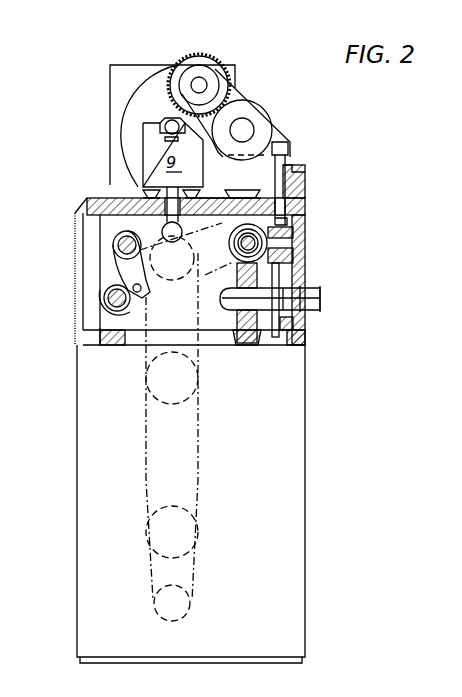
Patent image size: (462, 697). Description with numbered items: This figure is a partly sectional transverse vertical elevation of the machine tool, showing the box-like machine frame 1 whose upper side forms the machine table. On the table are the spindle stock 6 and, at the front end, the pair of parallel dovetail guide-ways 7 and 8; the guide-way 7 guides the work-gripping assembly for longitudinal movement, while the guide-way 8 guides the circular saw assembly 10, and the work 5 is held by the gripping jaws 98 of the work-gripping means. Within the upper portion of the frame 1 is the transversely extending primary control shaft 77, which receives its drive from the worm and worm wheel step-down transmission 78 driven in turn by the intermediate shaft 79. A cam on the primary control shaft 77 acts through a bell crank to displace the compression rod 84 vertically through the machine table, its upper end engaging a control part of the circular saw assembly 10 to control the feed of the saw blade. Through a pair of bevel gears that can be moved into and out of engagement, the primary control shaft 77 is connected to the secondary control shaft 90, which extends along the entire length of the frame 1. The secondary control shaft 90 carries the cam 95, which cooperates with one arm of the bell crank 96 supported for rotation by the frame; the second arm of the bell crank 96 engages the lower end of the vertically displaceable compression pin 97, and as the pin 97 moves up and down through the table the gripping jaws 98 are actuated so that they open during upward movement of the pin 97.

The machine frame 1 is at (88, 583).
The work 5 is at (171, 122).
The spindle stock 6 is at (113, 78).
The guide-way 7 is at (157, 190).
The guide-way 8 is at (252, 193).
The circular saw assembly 10 is at (217, 95).
The rotary shaft 77 is at (230, 312).
The worm and worm wheel step-down transmission 78 is at (252, 320).
The intermediate shaft 79 is at (248, 243).
The compression rod 84 is at (290, 220).
The secondary control shaft 90 is at (105, 298).
The cam 95 is at (100, 307).
The bell crank 96 is at (128, 268).
The compression pin 97 is at (160, 221).
The gripping jaws 98 is at (157, 130).